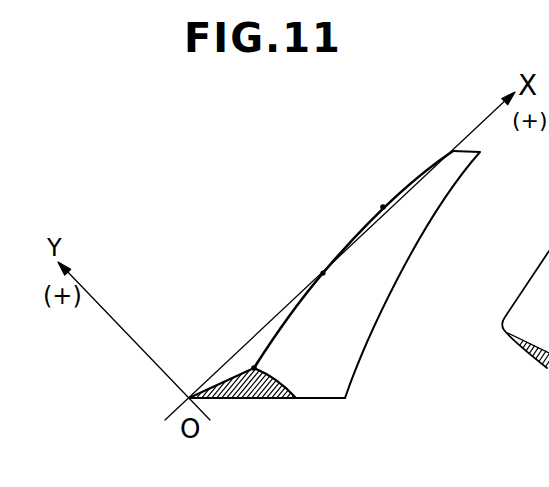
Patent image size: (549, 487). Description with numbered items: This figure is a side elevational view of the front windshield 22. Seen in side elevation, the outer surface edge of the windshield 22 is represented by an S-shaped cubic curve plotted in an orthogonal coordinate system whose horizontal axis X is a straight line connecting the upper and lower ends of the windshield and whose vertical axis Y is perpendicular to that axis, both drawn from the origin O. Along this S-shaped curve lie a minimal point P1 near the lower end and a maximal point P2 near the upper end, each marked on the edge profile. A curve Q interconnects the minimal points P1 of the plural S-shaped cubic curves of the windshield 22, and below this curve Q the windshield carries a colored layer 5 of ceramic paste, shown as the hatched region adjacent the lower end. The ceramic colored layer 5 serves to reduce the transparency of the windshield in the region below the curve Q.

The front windshield 22 is at (333, 287).
The colored layer 5 is at (256, 386).
The minimal point P1 is at (256, 367).
The maximal point P2 is at (383, 207).
The curve Q is at (281, 391).